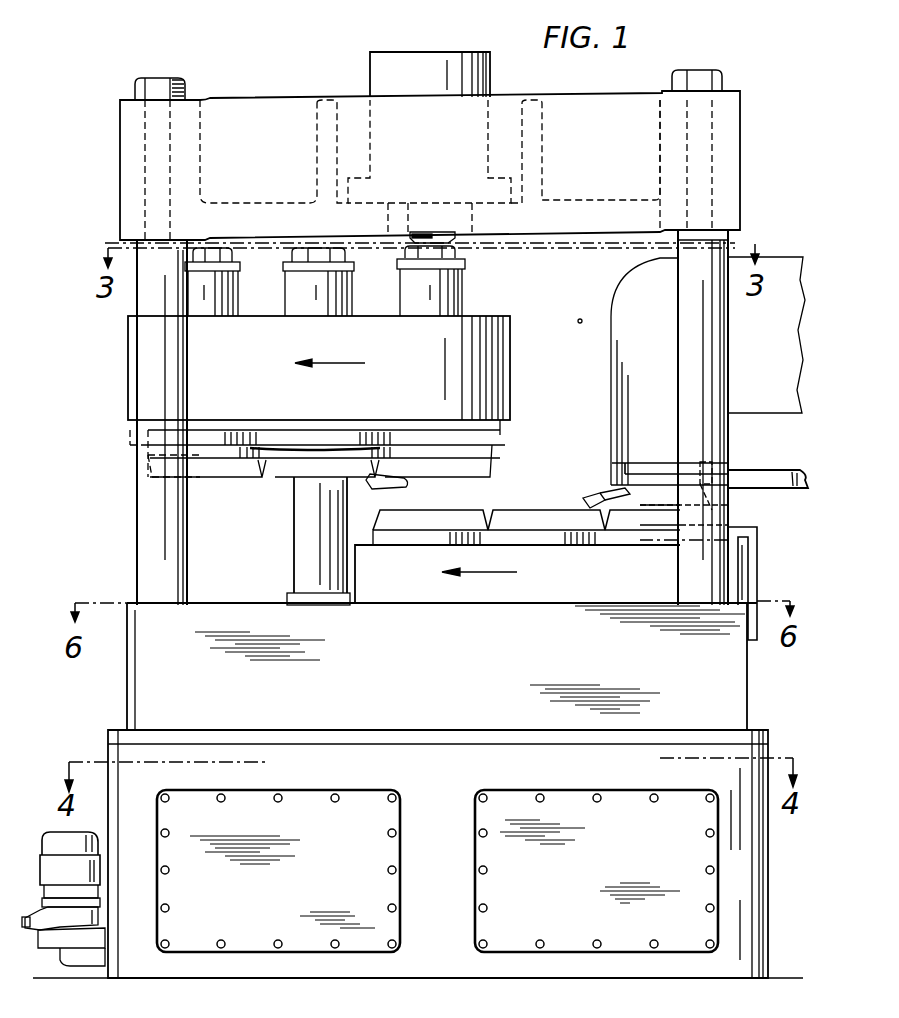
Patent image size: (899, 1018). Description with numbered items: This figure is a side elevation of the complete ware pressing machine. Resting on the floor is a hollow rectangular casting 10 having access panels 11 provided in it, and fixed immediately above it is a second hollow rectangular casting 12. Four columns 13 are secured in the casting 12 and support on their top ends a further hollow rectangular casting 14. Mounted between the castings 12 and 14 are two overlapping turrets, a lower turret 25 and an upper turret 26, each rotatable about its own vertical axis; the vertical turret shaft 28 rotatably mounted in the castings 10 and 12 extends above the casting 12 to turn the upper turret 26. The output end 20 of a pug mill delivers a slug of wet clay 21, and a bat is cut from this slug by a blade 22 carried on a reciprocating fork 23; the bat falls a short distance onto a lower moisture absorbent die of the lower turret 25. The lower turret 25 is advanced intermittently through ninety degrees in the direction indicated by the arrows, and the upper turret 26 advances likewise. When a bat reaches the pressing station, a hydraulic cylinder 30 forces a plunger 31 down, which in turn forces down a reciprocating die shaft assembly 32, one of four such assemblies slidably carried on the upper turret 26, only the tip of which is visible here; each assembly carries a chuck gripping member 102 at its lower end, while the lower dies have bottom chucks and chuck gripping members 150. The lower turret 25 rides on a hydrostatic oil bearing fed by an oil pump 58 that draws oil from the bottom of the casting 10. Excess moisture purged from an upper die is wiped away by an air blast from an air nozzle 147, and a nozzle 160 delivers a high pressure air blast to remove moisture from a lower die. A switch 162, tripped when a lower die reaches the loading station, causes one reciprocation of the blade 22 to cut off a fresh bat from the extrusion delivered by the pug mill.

The hollow rectangular casting 10 is at (770, 852).
The access panels 11 is at (376, 792).
The hollow rectangular casting 12 is at (747, 695).
The columns 13 is at (190, 556).
The hollow rectangular casting 14 is at (646, 97).
The output end of pug mill 20 is at (611, 359).
The slug of wet clay 21 is at (628, 465).
The blade 22 is at (700, 483).
The reciprocating fork 23 is at (786, 462).
The lower turret 25 is at (435, 550).
The upper turret 26 is at (510, 336).
The turret shaft 28 is at (293, 502).
The hydraulic cylinder 30 is at (490, 90).
The plunger 31 is at (455, 235).
The reciprocating die shaft assembly 32 is at (462, 252).
The oil pump 58 is at (52, 834).
The chuck gripping member 102 is at (242, 478).
The air nozzle 147 is at (378, 482).
The bottom chucks and chuck gripping members 150 is at (526, 500).
The nozzle 160 is at (585, 500).
The switch 162 is at (735, 527).